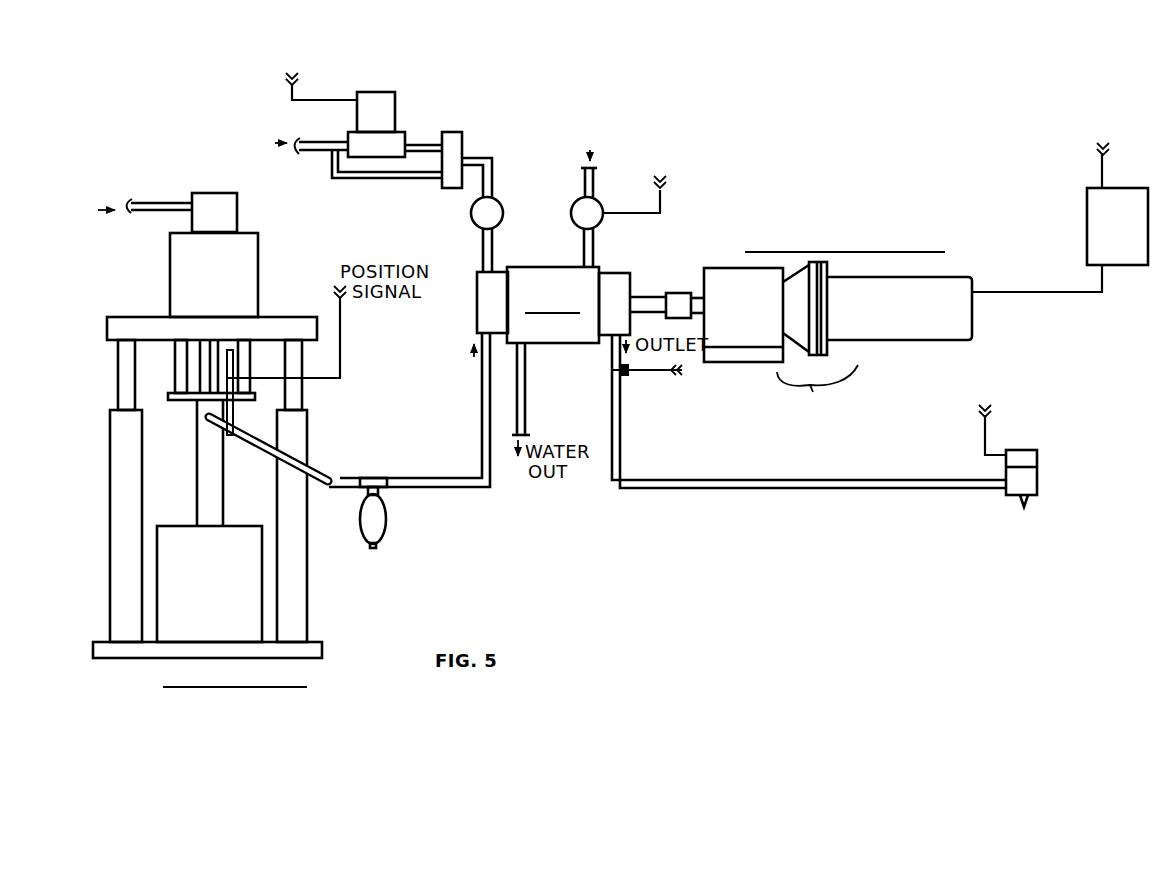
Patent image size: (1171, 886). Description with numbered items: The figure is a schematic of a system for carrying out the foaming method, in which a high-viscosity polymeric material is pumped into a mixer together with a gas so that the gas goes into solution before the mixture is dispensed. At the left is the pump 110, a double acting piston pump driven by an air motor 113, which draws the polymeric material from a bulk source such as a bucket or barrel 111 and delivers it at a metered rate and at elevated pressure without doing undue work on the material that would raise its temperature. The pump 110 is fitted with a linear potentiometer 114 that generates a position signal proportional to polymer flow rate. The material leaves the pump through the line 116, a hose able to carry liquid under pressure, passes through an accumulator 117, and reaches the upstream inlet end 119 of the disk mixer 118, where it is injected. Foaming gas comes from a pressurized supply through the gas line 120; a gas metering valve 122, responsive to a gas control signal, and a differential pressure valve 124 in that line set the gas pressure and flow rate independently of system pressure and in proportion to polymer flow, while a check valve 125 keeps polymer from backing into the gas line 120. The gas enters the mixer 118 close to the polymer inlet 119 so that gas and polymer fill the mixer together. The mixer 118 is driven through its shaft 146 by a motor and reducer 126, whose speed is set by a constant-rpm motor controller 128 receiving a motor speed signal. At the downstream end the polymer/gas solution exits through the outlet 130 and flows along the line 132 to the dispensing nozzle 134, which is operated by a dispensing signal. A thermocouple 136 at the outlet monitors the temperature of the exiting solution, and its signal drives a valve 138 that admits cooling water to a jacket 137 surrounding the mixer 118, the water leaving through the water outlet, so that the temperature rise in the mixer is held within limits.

The pump 110 is at (84, 603).
The bucket or barrel 111 is at (214, 601).
The air motor 113 is at (235, 210).
The linear potentiometer 114 is at (237, 412).
The line 116 is at (482, 433).
The accumulator 117 is at (381, 517).
The disk mixer 118 is at (484, 308).
The inlet end 119 is at (499, 340).
The gas line 120 is at (493, 157).
The gas metering valve 122 is at (388, 108).
The differential pressure valve 124 is at (450, 172).
The check valve 125 is at (517, 189).
The motor and reducer 126 is at (814, 398).
The motor controller 128 is at (1108, 228).
The outlet 130 is at (610, 337).
The line 132 is at (760, 489).
The dispensing nozzle 134 is at (1006, 504).
The thermocouple 136 is at (639, 377).
The jacket 137 is at (540, 275).
The valve 138 is at (617, 193).
The shaft 146 is at (638, 302).